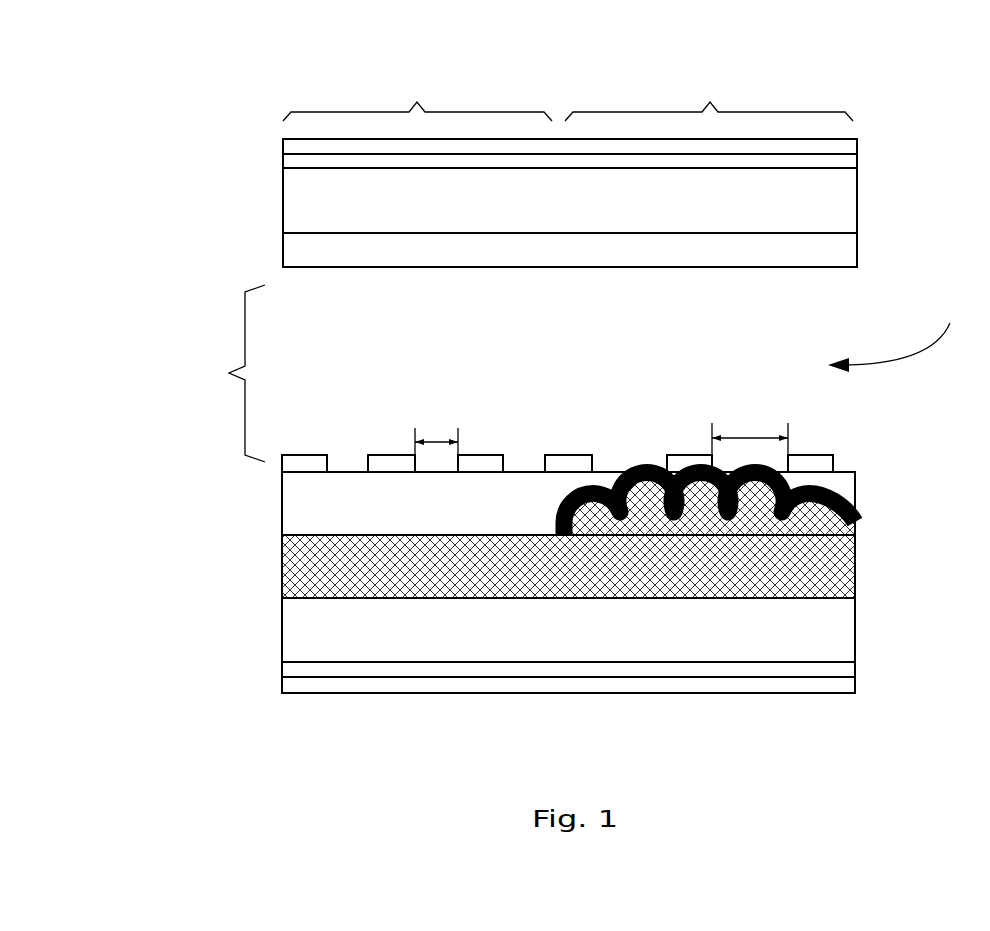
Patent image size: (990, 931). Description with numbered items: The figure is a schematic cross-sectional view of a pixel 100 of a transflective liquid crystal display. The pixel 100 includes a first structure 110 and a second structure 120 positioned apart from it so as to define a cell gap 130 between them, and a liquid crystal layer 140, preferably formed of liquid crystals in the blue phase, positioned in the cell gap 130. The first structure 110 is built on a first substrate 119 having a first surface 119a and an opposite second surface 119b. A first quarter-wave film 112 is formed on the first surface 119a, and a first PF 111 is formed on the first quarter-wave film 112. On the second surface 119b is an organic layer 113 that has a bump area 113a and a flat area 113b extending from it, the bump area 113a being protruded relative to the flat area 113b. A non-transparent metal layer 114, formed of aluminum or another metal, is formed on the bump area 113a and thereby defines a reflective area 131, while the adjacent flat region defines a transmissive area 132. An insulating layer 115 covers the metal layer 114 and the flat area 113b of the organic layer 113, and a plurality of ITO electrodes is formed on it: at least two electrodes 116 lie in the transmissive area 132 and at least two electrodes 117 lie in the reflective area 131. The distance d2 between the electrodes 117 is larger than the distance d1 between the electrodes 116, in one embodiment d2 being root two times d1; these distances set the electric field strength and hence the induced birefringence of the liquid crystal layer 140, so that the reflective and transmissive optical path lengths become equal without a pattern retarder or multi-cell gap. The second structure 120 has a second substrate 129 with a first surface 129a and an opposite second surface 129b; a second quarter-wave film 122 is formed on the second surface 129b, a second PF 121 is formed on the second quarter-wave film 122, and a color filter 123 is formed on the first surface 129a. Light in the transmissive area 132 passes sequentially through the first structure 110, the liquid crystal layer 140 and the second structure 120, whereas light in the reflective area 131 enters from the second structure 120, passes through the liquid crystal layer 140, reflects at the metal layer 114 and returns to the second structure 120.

The pixel 100 is at (548, 26).
The first structure 110 is at (265, 475).
The first PF 111 is at (838, 688).
The first quarter-wave film 112 is at (838, 672).
The organic layer 113 is at (855, 571).
The bump area 113a is at (748, 548).
The flat area 113b is at (516, 565).
The metal layer 114 is at (840, 508).
The insulating layer 115 is at (853, 470).
The electrodes 116 is at (390, 458).
The electrodes 117 is at (807, 458).
The first substrate 119 is at (836, 625).
The first surface 119a is at (435, 663).
The second surface 119b is at (368, 590).
The second structure 120 is at (265, 137).
The second PF 121 is at (857, 140).
The second quarter-wave film 122 is at (843, 163).
The color filter 123 is at (838, 254).
The second substrate 129 is at (840, 207).
The first surface 129a is at (443, 236).
The second surface 129b is at (377, 165).
The cell gap 130 is at (215, 373).
The reflective area 131 is at (709, 95).
The transmissive area 132 is at (417, 95).
The liquid crystal layer 140 is at (899, 333).
The distance between the electrodes in the transmissive area d1 is at (436, 429).
The distance between the electrodes in the reflective area d2 is at (750, 428).